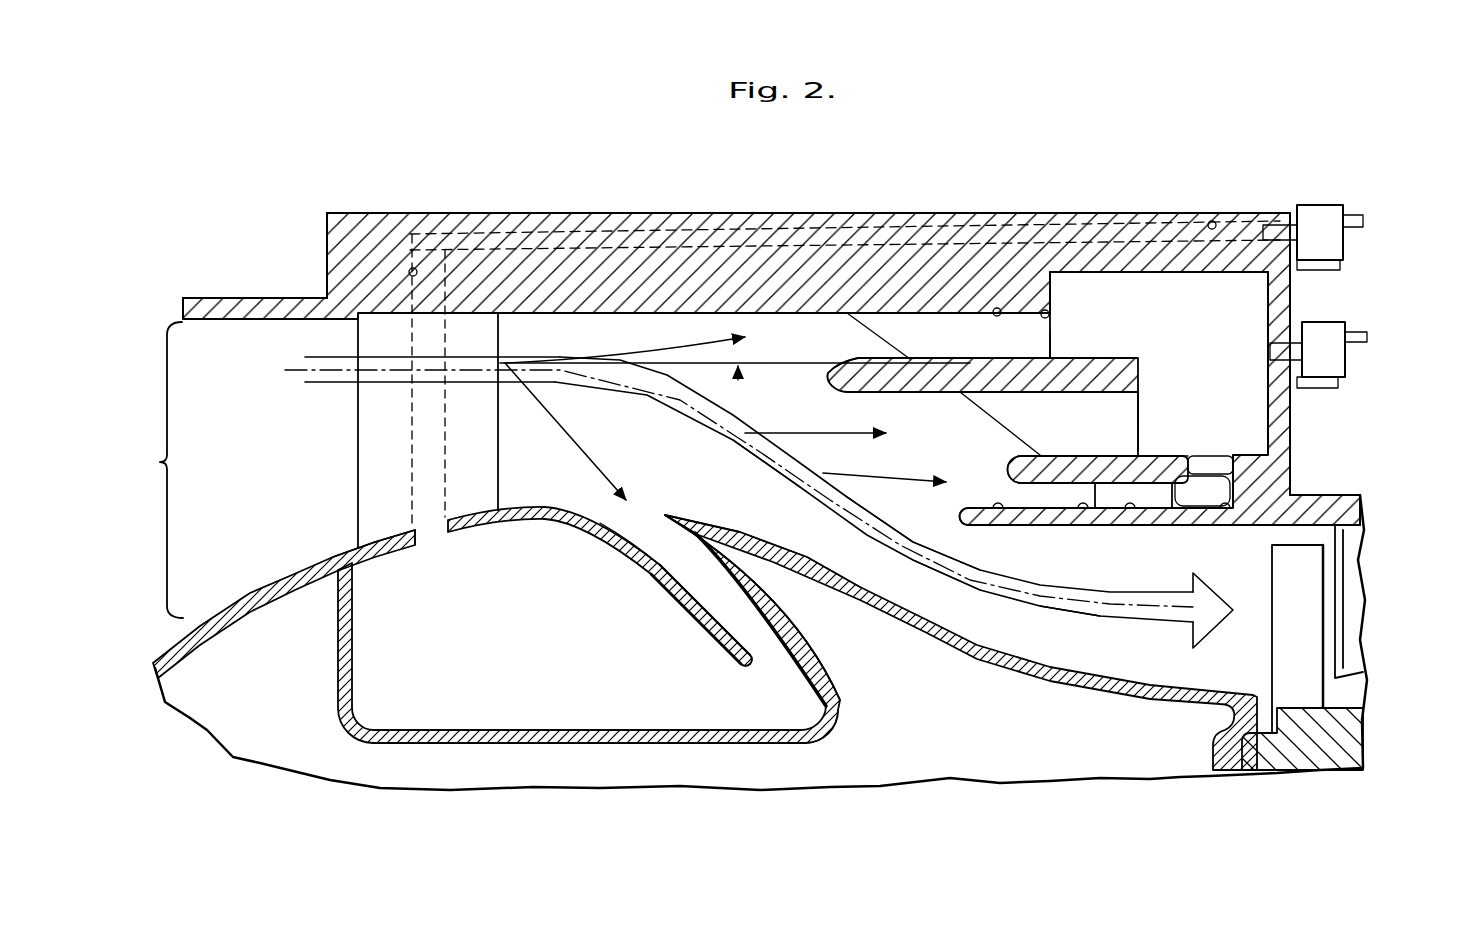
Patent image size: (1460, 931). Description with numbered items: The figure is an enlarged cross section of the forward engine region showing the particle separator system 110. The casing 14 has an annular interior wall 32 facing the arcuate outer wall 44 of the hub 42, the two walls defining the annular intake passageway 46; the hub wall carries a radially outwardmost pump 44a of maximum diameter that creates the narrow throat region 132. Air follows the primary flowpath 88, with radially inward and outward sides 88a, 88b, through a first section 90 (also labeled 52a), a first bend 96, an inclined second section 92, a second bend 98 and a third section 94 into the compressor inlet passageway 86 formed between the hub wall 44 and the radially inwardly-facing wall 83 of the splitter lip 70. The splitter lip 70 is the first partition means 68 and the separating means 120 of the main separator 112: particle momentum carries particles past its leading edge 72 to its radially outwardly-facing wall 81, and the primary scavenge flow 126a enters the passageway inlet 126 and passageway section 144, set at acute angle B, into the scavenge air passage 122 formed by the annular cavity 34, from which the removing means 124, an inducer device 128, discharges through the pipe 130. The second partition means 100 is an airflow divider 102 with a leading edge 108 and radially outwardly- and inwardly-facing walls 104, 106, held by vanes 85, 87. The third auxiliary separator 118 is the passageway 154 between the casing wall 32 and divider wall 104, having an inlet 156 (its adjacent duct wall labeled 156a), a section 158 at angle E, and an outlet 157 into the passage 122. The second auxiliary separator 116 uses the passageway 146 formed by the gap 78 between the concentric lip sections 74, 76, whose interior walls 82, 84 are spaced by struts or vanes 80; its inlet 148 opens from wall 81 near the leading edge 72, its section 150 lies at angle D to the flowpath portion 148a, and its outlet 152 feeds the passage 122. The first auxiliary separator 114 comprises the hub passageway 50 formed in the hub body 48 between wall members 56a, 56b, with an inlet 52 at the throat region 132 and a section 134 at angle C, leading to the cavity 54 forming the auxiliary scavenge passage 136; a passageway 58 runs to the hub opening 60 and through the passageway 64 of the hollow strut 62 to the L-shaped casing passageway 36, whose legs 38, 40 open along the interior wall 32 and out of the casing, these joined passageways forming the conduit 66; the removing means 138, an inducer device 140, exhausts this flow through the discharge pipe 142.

The casing 14 is at (650, 212).
The passageway 36 is at (718, 222).
The particle separator system 110 is at (500, 211).
The conduit 66 is at (548, 226).
The passageway 154 is at (996, 308).
The leg 40 is at (1212, 221).
The leg 38 is at (406, 264).
The interior wall 32 is at (358, 320).
The partition means 68 is at (1292, 438).
The main separator 112 is at (1292, 420).
The removing means 138 is at (1330, 203).
The discharge pipe 142 is at (1364, 220).
The inducer device 140 is at (1344, 240).
The removing means 124 is at (1352, 363).
The inducer device 128 is at (1340, 322).
The pipe 130 is at (1367, 336).
The third auxiliary particle separator 118 is at (1115, 318).
The annular cavity 34 is at (1112, 278).
The outlet 157 is at (1050, 319).
The vanes 87 is at (1052, 345).
The partition means 100 is at (1117, 355).
The leading edge 108 is at (830, 376).
The passageway inlet 126 is at (868, 396).
The airflow divider 102 is at (912, 393).
The radially inwardly-facing wall 106 is at (1003, 393).
The radially outwardly-facing wall 104 is at (1005, 356).
The inlet 156 is at (851, 316).
The section 158 is at (905, 315).
The passageway section 144 is at (986, 418).
The separating means 120 is at (1116, 445).
The vanes 85 is at (1140, 407).
The radially outwardly-facing wall 81 is at (1089, 455).
The splitter lip 70 is at (1013, 458).
The outlet 152 is at (1212, 456).
The section 76 is at (1160, 456).
The scavenge air passage 122 is at (1180, 418).
The interior wall 82 is at (1038, 490).
The gap 78 is at (1105, 490).
The second auxiliary particle separator 116 is at (1205, 488).
The inlet 148 is at (1000, 499).
The leading edge 72 is at (958, 508).
The section 150 is at (997, 529).
The radially inwardly-facing wall 83 is at (1014, 528).
The section 74 is at (1083, 527).
The struts or vanes 80 is at (1123, 527).
The interior wall 84 is at (1203, 527).
The passageway 146 is at (1066, 528).
The strut 62 is at (358, 432).
The first section 90 is at (430, 365).
The passageway 64 is at (412, 448).
The axially extending portion 52a is at (498, 352).
The throat region 132 is at (546, 318).
The radially outward side 88b is at (412, 340).
The radially inward side 88a is at (374, 384).
The first bend 96 is at (616, 358).
The inner flowpath wall 156a is at (646, 393).
The primary flowpath 88 is at (1149, 630).
The second section 92 is at (857, 527).
The second bend 98 is at (986, 598).
The third section 94 is at (1091, 619).
The acute angle E is at (741, 360).
The acute angle C is at (560, 394).
The acute angle B is at (804, 436).
The acute angle D is at (859, 479).
The primary scavenge flow 126a is at (748, 455).
The hub 42 is at (247, 600).
The outer wall 44 is at (393, 530).
The opening 60 is at (431, 537).
The intake passageway 46 is at (152, 470).
The passageway 58 is at (508, 643).
The interior cavity 54 is at (676, 743).
The auxiliary scavenge passage 136 is at (791, 743).
The first auxiliary particle separator 114 is at (556, 748).
The wall member 56b is at (752, 596).
The opening 52 is at (596, 506).
The passageway 50 is at (696, 609).
The section 134 is at (655, 567).
The wall member 56a is at (736, 651).
The inlet passageway 86 is at (1110, 700).
The flowpath portion 148a is at (801, 495).
The hub body 48 is at (758, 531).
The radially outwardmost hump 44a is at (666, 512).